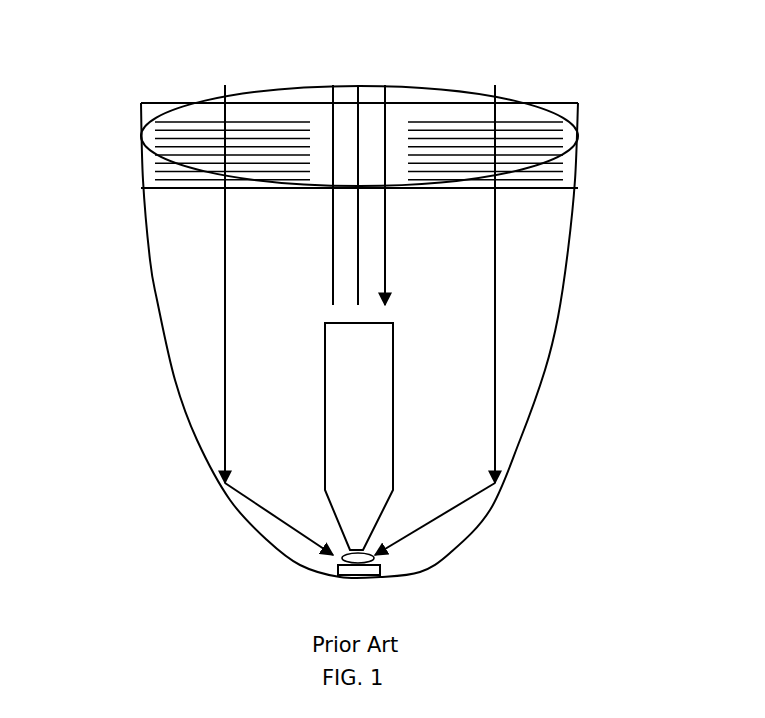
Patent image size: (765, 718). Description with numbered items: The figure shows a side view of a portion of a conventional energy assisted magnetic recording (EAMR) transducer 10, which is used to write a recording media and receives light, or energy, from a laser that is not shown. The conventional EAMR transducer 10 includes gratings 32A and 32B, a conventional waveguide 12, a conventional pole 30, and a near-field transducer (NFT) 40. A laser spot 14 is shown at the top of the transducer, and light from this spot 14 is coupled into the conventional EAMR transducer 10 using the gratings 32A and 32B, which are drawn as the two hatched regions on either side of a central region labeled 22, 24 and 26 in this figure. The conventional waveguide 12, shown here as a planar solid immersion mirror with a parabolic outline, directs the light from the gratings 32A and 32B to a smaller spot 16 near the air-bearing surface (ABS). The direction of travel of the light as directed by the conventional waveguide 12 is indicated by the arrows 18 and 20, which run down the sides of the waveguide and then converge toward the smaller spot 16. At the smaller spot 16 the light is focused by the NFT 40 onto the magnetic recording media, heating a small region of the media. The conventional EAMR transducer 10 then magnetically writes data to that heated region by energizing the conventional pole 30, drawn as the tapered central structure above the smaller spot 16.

The conventional energy assisted magnetic recording transducer 10 is at (375, 32).
The conventional waveguide 12 is at (560, 307).
The laser spot 14 is at (460, 90).
The smaller spot 16 is at (338, 577).
The arrow 18 is at (495, 417).
The arrow 20 is at (225, 383).
The grating coupler 22 is at (385, 242).
The grating coupler 24 is at (333, 242).
The incident light 26 is at (362, 120).
The conventional pole 30 is at (325, 385).
The grating 32A is at (192, 197).
The grating 32B is at (523, 200).
The near-field transducer 40 is at (362, 577).
The air-bearing surface ABS is at (258, 558).